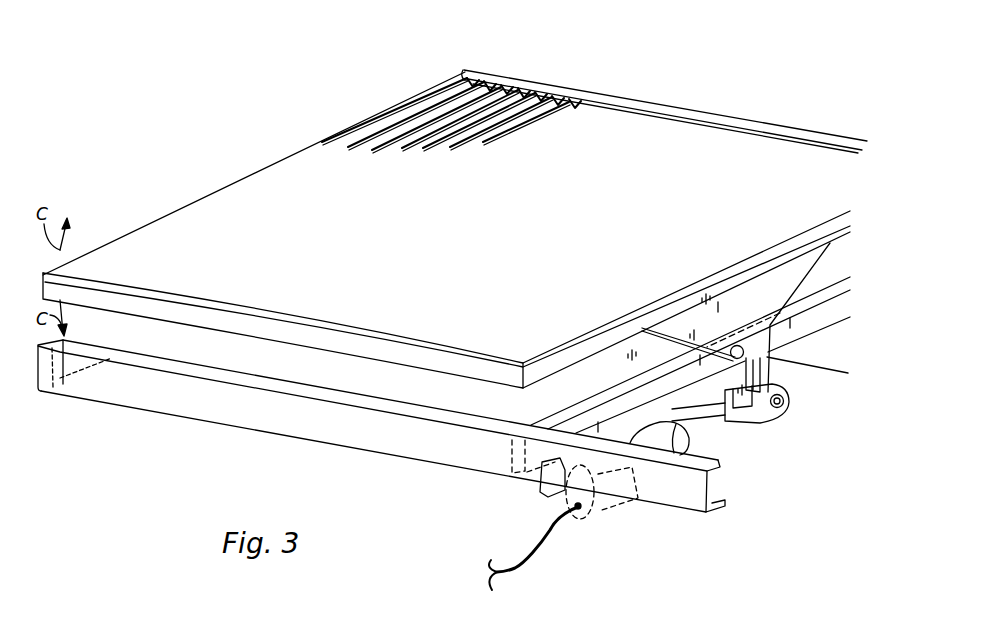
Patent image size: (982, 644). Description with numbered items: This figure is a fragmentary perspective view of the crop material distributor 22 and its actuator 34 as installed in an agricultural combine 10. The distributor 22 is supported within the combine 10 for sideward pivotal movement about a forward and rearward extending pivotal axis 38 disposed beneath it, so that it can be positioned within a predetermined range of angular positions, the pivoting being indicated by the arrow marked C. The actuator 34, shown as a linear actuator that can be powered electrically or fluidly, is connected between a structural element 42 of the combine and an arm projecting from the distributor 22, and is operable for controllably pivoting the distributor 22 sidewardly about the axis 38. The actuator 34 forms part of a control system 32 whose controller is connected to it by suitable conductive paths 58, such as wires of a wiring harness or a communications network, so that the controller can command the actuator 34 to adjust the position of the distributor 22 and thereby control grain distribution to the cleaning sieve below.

The agricultural combine 10 is at (713, 100).
The crop material distributor 22 is at (795, 128).
The system 32 is at (755, 468).
The actuator 34 is at (692, 449).
The pivotal axis 38 is at (827, 372).
The structural element 42 is at (433, 440).
The conductive paths 58 is at (550, 530).